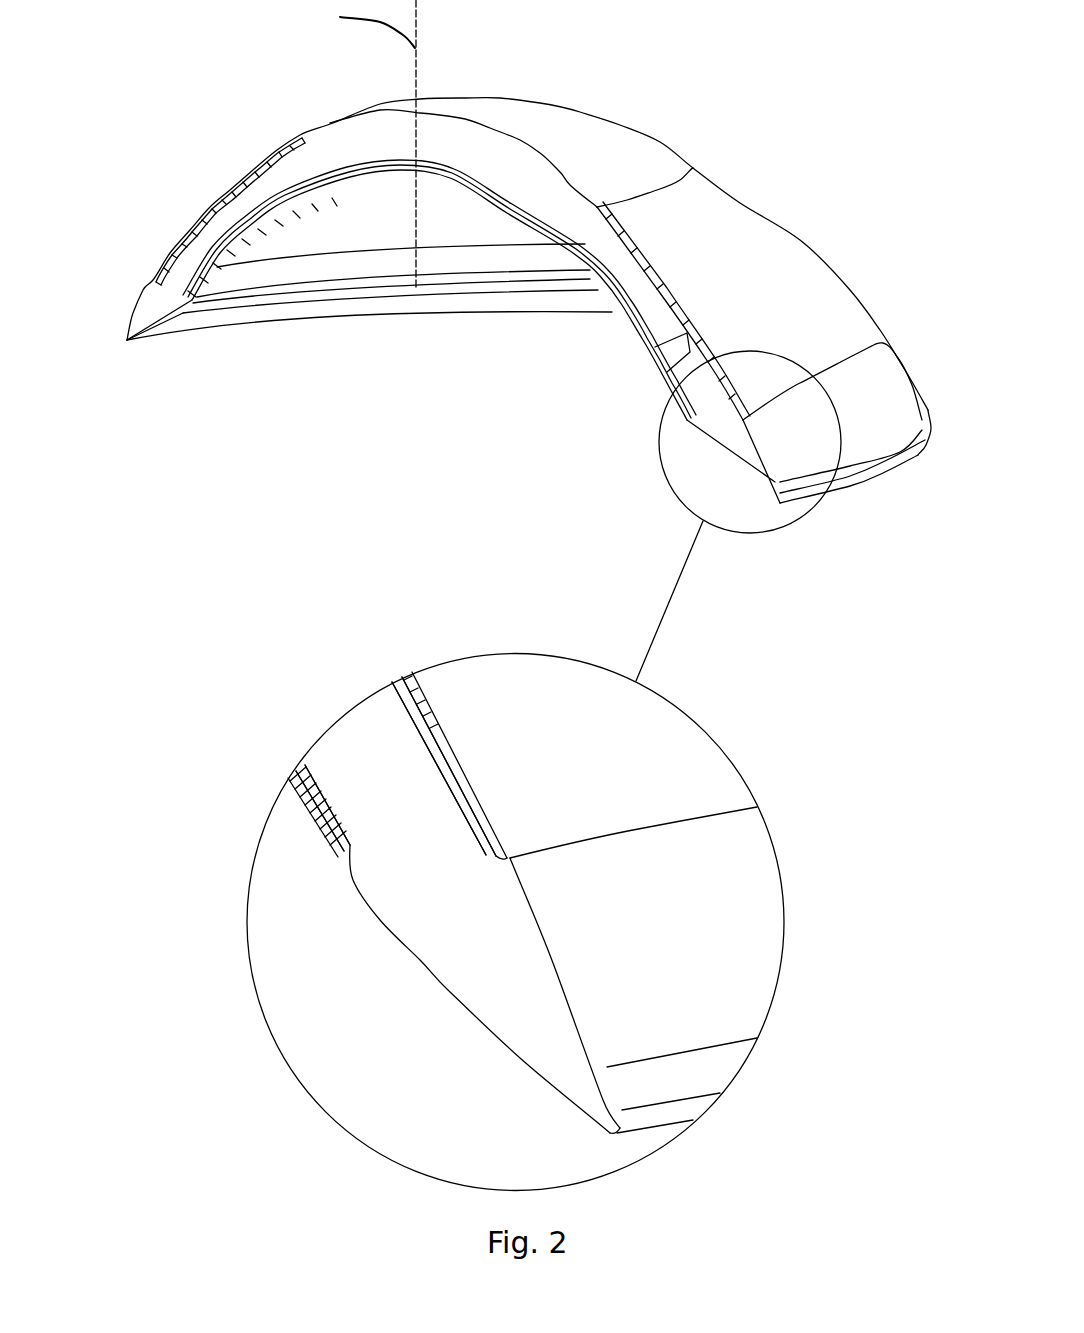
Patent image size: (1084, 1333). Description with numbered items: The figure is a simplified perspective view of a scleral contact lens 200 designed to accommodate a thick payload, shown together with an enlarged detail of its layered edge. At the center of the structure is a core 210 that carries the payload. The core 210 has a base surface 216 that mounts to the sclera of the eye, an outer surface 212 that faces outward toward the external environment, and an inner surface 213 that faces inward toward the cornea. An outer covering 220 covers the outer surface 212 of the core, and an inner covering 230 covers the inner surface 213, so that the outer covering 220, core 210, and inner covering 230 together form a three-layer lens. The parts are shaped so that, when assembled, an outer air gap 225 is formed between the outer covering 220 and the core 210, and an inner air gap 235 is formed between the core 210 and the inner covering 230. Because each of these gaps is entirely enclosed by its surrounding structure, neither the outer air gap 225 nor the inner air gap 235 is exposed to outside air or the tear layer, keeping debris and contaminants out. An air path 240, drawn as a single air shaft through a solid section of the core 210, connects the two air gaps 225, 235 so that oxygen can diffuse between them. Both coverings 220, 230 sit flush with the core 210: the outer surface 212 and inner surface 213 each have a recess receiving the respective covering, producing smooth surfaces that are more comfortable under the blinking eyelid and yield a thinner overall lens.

The scleral contact lens 200 is at (150, 136).
The core 210 is at (455, 158).
The outer surface 212 is at (397, 707).
The inner surface 213 is at (313, 773).
The base surface 216 is at (450, 992).
The outer covering 220 is at (750, 230).
The outer air gap 225 is at (415, 718).
The inner covering 230 is at (197, 923).
The inner air gap 235 is at (317, 792).
The air path 240 is at (677, 347).